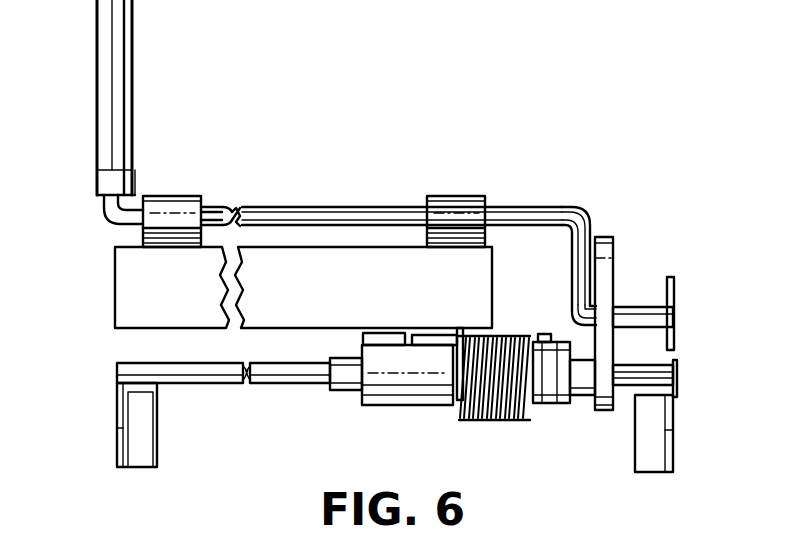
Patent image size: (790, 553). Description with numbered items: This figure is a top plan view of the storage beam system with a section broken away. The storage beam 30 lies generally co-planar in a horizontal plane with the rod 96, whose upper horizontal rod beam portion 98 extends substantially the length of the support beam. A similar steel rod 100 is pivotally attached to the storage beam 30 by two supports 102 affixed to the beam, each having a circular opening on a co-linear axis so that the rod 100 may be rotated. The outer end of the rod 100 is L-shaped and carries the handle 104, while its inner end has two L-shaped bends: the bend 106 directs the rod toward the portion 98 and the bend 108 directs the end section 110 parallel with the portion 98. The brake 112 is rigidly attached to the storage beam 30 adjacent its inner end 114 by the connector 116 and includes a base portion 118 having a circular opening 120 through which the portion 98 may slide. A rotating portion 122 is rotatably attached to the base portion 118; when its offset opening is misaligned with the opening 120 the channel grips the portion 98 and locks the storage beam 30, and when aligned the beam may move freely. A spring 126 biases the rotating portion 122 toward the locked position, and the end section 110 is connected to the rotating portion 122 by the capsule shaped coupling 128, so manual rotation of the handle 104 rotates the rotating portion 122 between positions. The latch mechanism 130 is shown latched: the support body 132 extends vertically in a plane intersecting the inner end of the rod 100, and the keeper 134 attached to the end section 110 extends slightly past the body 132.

The storage beam 30 is at (115, 289).
The rod 96 is at (292, 385).
The upper horizontal rod beam portion 98 is at (200, 385).
The steel rod 100 is at (546, 206).
The supports 102 is at (172, 195).
The handle 104 is at (135, 70).
The bend 106 is at (591, 220).
The bend 108 is at (580, 311).
The end section 110 is at (637, 300).
The brake 112 is at (425, 410).
The inner end 114 is at (494, 262).
The connector 116 is at (360, 334).
The base portion 118 is at (383, 407).
The circular opening 120 is at (574, 405).
The rotating portion 122 is at (543, 405).
The spring 126 is at (520, 423).
The capsule shaped coupling 128 is at (614, 258).
The latch mechanism 130 is at (690, 299).
The support body 132 is at (676, 341).
The keeper 134 is at (676, 314).